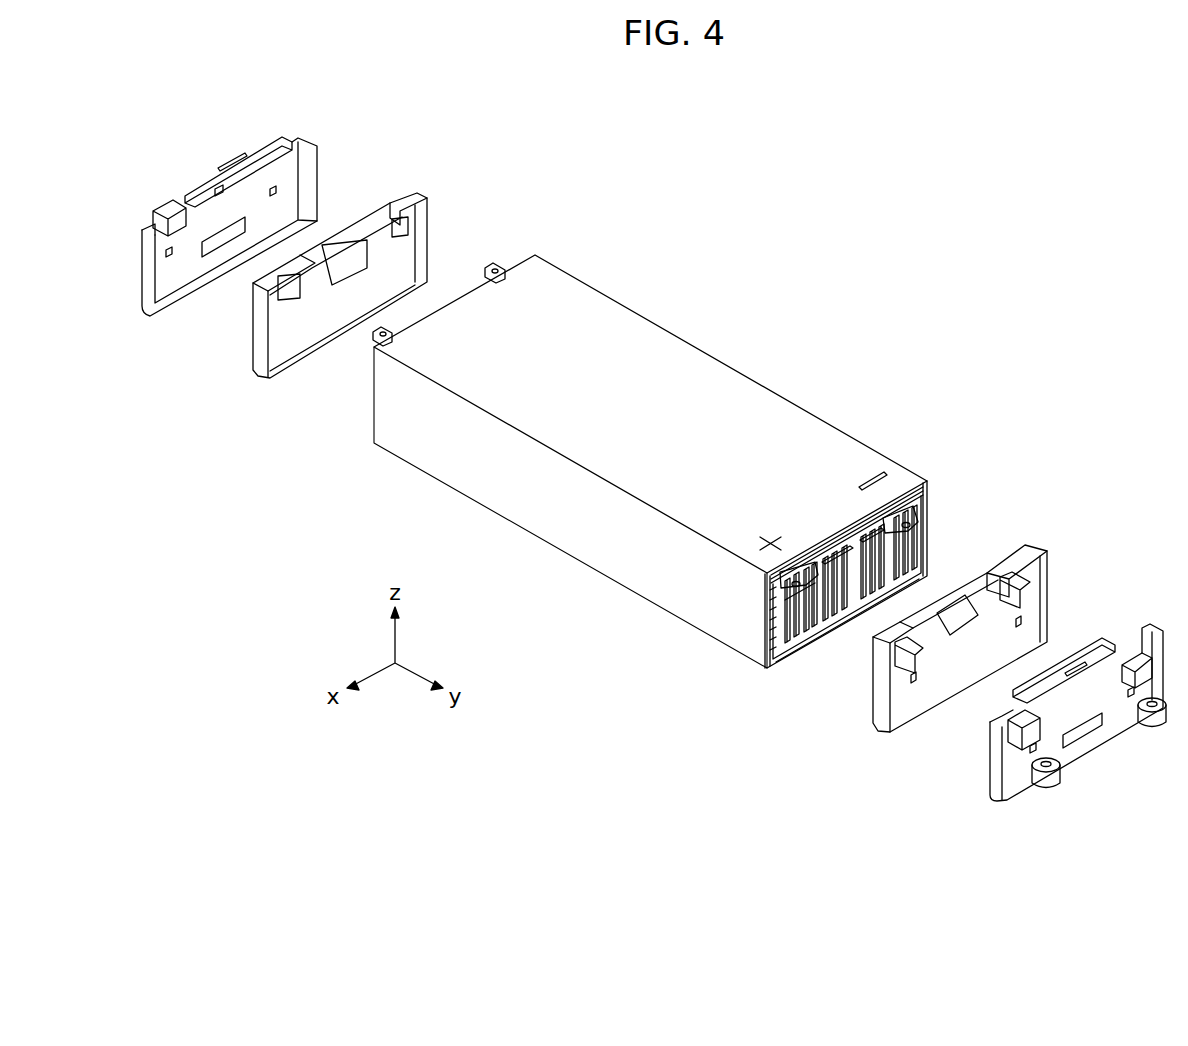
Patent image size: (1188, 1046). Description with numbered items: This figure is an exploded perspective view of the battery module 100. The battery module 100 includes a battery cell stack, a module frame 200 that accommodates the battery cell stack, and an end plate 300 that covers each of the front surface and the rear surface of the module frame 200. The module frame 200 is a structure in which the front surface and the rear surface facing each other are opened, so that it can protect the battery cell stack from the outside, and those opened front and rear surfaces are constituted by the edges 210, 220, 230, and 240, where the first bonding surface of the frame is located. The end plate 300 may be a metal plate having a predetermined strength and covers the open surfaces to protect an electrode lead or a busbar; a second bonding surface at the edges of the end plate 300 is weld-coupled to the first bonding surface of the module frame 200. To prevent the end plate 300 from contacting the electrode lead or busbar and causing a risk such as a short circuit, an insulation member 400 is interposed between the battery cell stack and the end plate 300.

The battery module 100 is at (671, 221).
The module frame 200 is at (707, 371).
The edge 210 is at (833, 527).
The edge 220 is at (921, 517).
The edge 230 is at (765, 622).
The edge 240 is at (813, 643).
The end plate 300 is at (203, 188).
The insulation member 400 is at (413, 198).